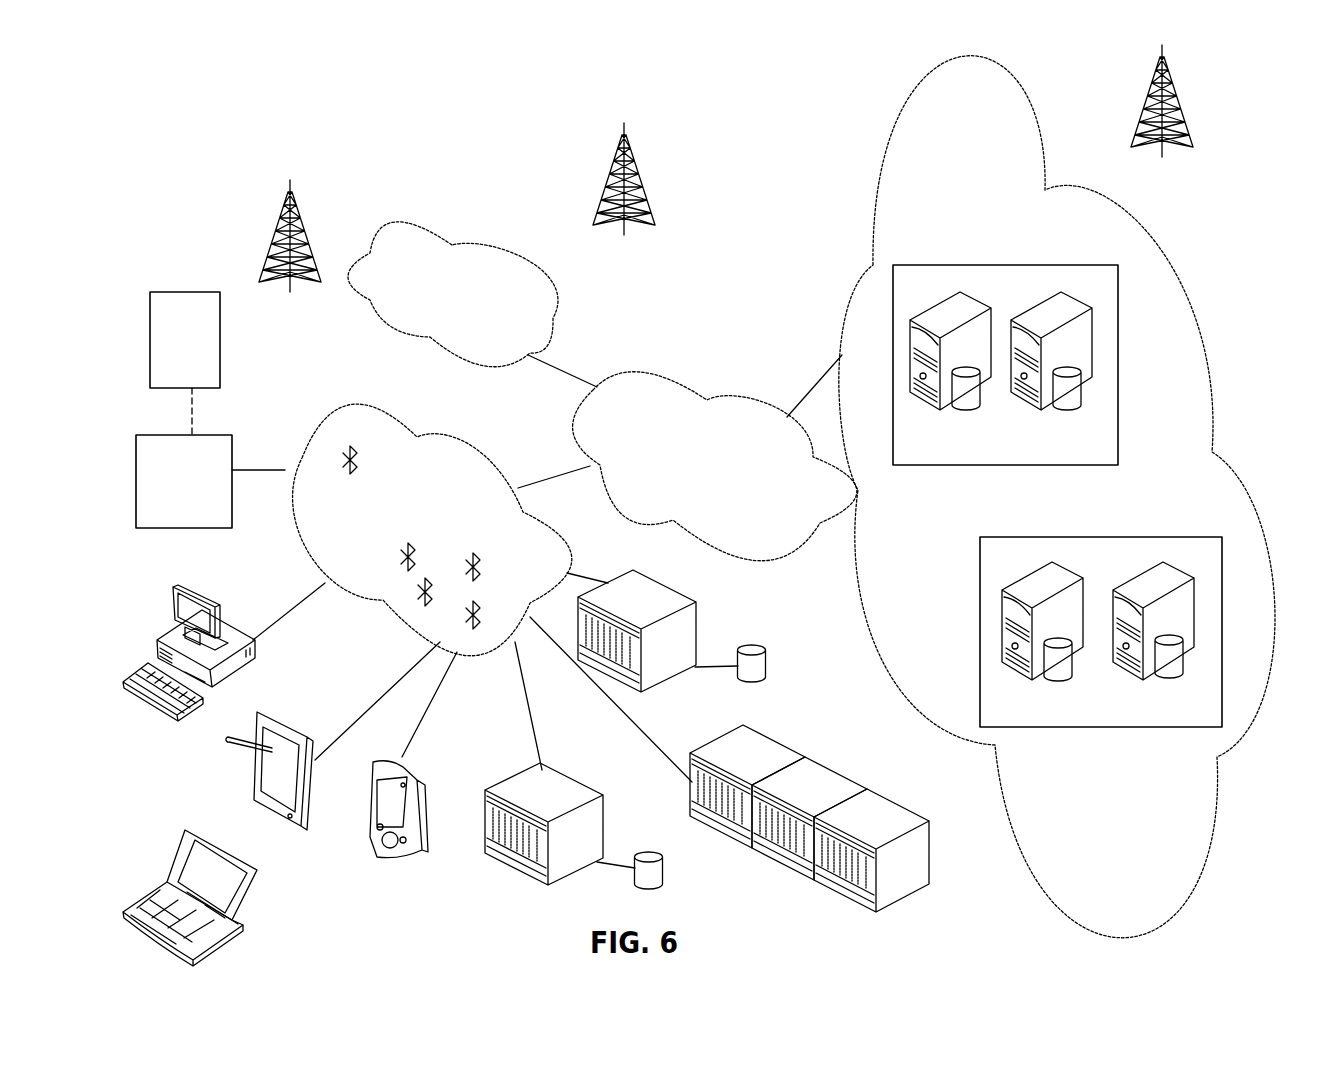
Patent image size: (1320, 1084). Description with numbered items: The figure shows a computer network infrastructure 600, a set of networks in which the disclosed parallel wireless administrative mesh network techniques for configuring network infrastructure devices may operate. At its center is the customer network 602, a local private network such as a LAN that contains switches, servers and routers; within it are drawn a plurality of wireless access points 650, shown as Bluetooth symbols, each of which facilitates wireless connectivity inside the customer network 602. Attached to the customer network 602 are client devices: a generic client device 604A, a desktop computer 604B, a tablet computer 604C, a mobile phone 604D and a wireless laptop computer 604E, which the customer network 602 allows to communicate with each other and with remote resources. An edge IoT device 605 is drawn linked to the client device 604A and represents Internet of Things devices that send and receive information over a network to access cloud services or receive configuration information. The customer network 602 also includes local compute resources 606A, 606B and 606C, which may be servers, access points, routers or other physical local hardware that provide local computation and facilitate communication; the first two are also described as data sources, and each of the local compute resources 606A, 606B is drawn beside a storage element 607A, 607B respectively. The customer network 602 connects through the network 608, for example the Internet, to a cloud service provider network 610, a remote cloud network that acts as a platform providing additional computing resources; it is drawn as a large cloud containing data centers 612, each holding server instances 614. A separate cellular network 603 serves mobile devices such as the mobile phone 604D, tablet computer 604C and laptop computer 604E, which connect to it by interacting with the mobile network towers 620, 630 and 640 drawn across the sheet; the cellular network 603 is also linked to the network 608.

The computer network infrastructure 600 is at (375, 153).
The customer network 602 is at (440, 435).
The cellular network 603 is at (482, 242).
The client device 604A is at (227, 433).
The desktop computer 604B is at (203, 587).
The tablet computer 604C is at (283, 713).
The mobile phone 604D is at (412, 765).
The laptop computer 604E is at (253, 877).
The edge IoT device 605 is at (165, 292).
The local compute resource 606A is at (547, 793).
The local compute resource 606B is at (697, 620).
The local compute resource 606C is at (765, 738).
The database 607A is at (662, 880).
The database 607B is at (765, 662).
The network 608 is at (650, 372).
The cloud service provider network 610 is at (1166, 265).
The data center 612 is at (1122, 498).
The server instance 614 is at (1175, 705).
The mobile network tower 620 is at (624, 205).
The mobile network tower 630 is at (290, 261).
The mobile network tower 640 is at (1162, 123).
The wireless access point 650 is at (355, 444).